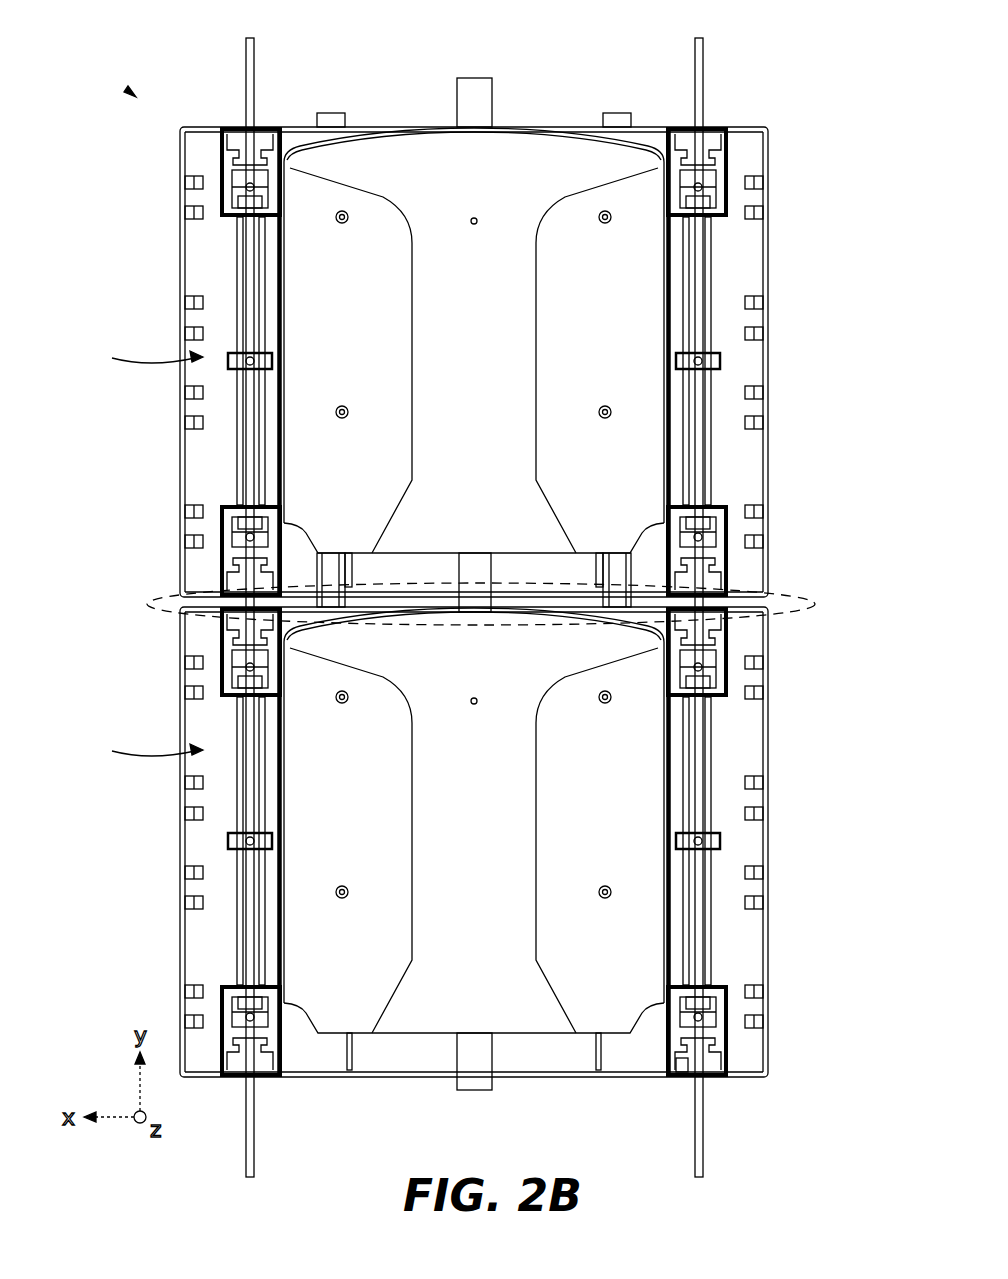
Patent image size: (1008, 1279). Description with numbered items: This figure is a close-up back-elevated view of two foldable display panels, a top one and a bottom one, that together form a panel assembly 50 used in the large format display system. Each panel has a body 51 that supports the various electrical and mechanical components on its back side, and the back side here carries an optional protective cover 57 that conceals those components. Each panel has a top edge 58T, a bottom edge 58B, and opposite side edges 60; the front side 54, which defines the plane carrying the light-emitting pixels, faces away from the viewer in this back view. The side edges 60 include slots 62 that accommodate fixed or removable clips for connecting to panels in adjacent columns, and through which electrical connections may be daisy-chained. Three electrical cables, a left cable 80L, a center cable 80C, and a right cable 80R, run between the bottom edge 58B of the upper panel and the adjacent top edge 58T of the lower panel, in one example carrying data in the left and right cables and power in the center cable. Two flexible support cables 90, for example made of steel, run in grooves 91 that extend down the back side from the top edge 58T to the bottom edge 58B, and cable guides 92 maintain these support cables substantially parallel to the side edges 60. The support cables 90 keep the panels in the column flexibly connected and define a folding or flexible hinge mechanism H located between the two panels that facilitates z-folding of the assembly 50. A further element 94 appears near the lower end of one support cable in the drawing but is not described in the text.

The assembly 50 is at (130, 93).
The body 51 is at (750, 465).
The front side 54 is at (146, 553).
The protective cover 57 is at (425, 160).
The top edge 58T is at (565, 125).
The bottom edge 58B is at (200, 586).
The side edges 60 is at (182, 245).
The slots 62 is at (766, 212).
The center electrical cable 80C is at (475, 78).
The left electrical cable 80L is at (615, 113).
The right electrical cable 80R is at (330, 113).
The support cables 90 is at (246, 62).
The grooves 91 is at (237, 285).
The cable guides 92 is at (225, 162).
The nut 94 is at (680, 1072).
The hinge H is at (150, 604).